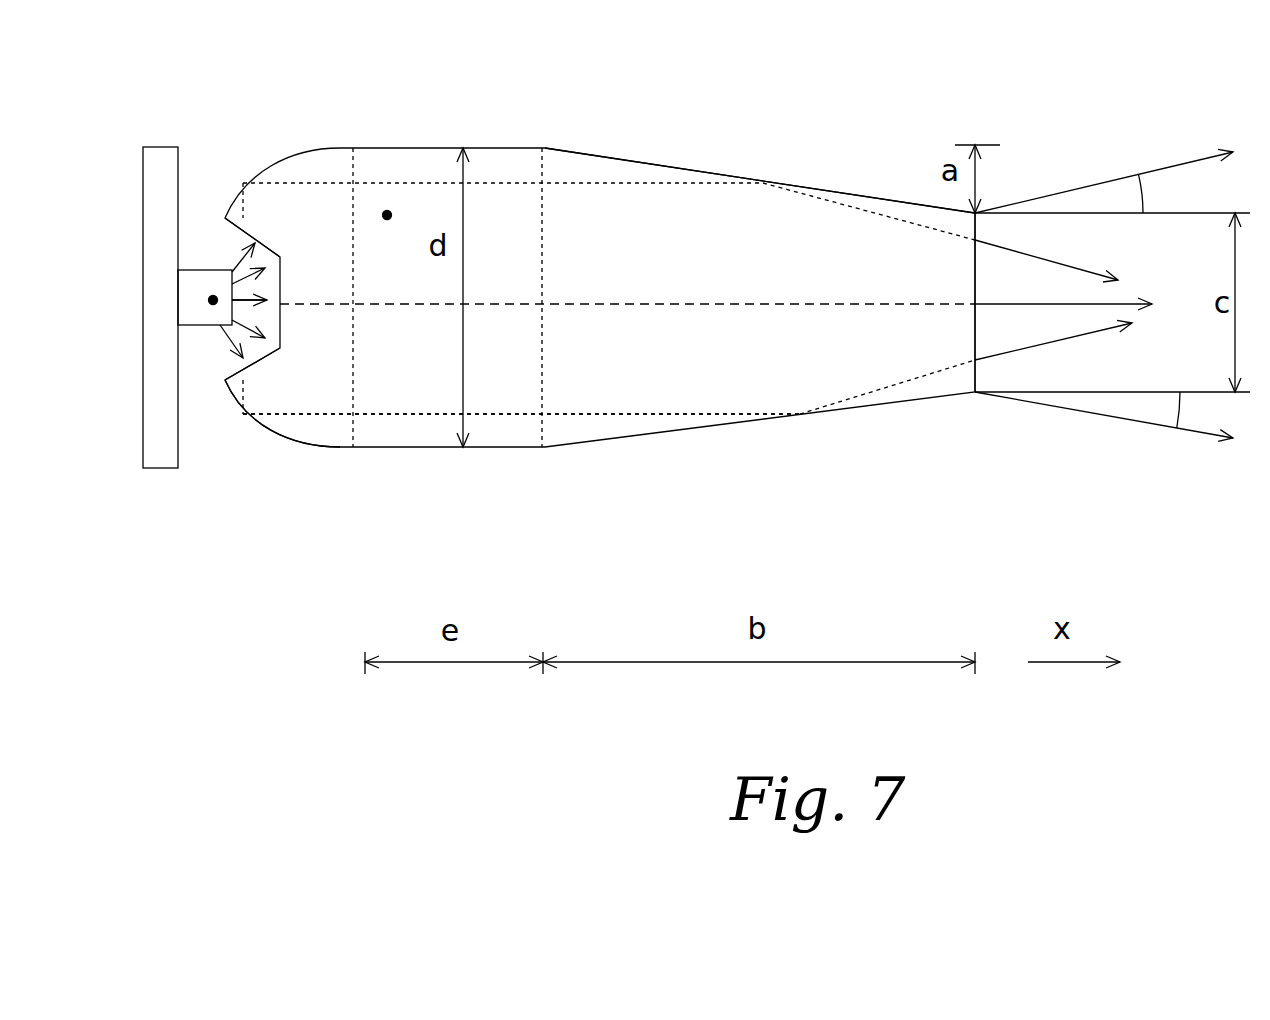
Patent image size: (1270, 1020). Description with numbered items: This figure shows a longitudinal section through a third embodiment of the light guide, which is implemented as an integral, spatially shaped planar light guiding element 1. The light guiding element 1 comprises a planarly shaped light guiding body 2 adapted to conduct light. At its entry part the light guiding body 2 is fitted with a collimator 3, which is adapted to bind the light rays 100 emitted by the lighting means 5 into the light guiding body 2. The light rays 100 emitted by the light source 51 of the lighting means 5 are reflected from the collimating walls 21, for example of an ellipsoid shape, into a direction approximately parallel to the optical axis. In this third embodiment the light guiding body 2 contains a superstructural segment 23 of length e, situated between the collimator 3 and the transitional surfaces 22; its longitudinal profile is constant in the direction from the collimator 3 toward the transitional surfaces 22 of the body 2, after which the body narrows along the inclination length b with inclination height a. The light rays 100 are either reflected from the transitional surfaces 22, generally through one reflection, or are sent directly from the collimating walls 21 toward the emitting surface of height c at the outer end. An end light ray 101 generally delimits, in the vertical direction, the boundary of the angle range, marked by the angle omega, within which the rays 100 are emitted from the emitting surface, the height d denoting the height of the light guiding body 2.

The light guiding element 1 is at (600, 312).
The light guiding body 2 is at (495, 148).
The collimator 3 is at (258, 170).
The lighting means 5 is at (195, 268).
The collimating wall 21 is at (297, 460).
The transitional surface 22 is at (657, 148).
The superstructural segment 23 is at (387, 215).
The light source 51 is at (213, 300).
The light ray 100 is at (220, 342).
The end light ray 101 is at (1083, 423).